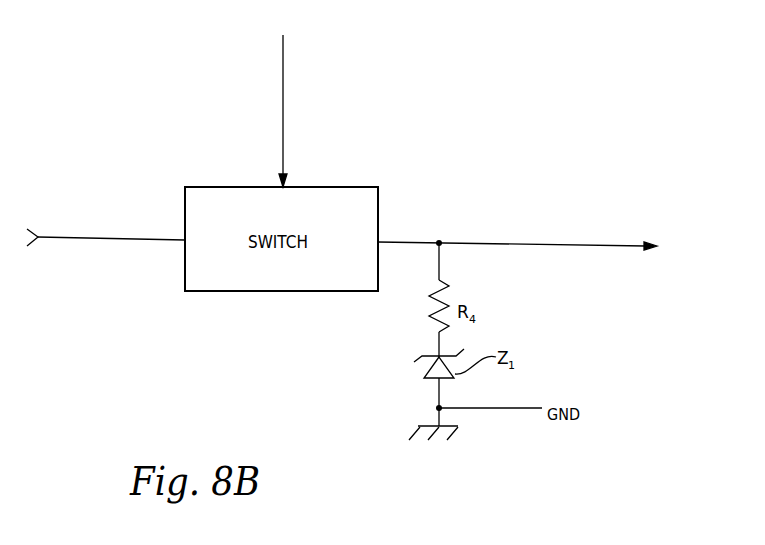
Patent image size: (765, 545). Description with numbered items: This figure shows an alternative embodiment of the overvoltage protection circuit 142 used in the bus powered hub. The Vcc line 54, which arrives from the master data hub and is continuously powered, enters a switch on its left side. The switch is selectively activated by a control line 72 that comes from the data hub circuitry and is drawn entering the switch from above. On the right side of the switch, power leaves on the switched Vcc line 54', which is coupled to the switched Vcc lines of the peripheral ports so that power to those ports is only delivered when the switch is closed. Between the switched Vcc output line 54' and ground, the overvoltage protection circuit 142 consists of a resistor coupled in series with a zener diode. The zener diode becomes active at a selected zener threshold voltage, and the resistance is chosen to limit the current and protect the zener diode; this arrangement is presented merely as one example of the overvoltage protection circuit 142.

The Vcc line 54 is at (106, 269).
The switched Vcc line 54' is at (517, 211).
The control line 72 is at (283, 76).
The overvoltage protection circuit 142 is at (624, 338).